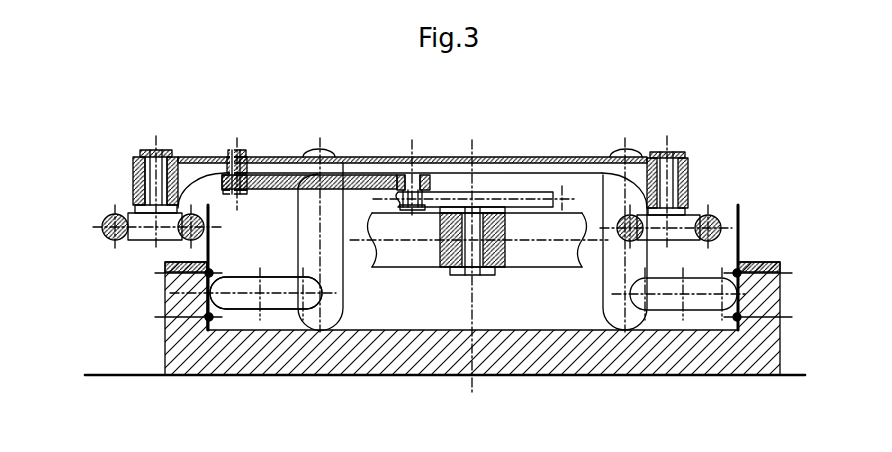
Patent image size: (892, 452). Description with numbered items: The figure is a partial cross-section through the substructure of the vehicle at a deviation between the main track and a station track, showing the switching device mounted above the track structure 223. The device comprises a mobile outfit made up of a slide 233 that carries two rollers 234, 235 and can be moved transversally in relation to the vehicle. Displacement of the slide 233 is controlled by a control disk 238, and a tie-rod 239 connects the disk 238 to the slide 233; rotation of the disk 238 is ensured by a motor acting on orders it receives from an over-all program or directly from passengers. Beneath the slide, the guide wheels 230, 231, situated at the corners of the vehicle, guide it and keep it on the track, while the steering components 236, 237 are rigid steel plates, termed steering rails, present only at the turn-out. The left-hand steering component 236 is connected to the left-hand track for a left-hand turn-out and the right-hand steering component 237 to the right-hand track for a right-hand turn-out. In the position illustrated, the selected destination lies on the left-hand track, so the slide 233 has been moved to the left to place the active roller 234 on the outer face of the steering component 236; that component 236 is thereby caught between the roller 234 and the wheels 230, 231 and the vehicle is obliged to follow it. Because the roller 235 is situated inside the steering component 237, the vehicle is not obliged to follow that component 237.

The base 223 is at (430, 376).
The wheel 230 is at (243, 300).
The wheel 231 is at (243, 413).
The slide 233 is at (595, 157).
The roller 234 is at (112, 213).
The roller 235 is at (621, 245).
The steering component 236 is at (208, 205).
The steering component 237 is at (738, 205).
The control disk 238 is at (487, 207).
The tie-rod 239 is at (355, 176).